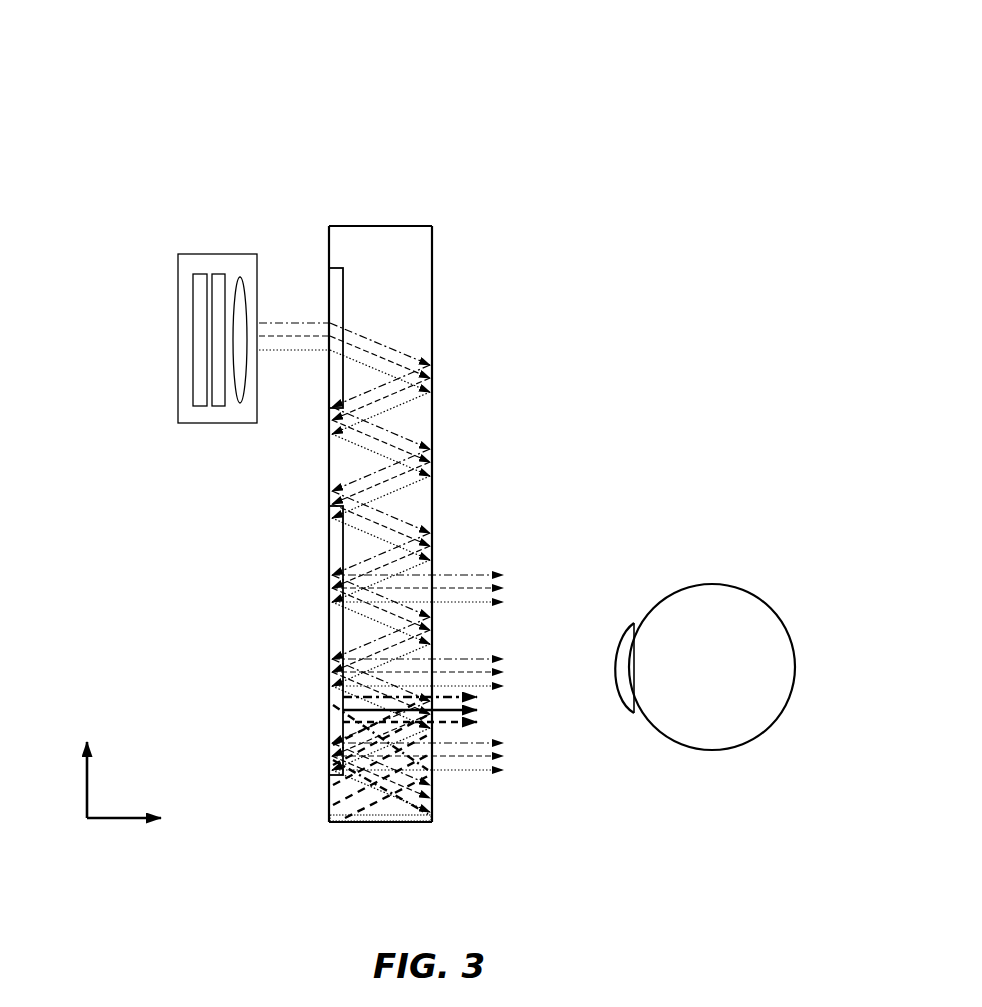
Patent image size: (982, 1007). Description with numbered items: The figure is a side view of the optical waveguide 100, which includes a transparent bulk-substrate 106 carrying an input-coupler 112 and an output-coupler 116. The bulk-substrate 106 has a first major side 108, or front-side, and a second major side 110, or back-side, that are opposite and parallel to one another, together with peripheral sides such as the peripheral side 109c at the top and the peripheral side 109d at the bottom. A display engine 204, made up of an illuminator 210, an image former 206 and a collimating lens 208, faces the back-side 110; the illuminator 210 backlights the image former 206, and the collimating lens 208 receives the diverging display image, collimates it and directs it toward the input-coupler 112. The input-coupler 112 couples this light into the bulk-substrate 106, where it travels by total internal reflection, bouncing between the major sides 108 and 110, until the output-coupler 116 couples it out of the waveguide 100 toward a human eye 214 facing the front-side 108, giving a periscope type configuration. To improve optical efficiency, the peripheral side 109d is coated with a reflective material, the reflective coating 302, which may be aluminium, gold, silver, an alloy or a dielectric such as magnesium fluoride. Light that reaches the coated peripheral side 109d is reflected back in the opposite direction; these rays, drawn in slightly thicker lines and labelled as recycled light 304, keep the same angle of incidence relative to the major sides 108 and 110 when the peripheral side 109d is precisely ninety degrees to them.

The optical waveguide 100 is at (412, 72).
The bulk-substrate 106 is at (393, 261).
The first major side 108 is at (433, 256).
The peripheral side 109c is at (389, 226).
The peripheral side 109d is at (420, 823).
The second major side 110 is at (325, 235).
The input-coupler 112 is at (327, 278).
The output-coupler 116 is at (327, 732).
The display engine 204 is at (189, 347).
The image former 206 is at (216, 406).
The collimating lens 208 is at (240, 406).
The illuminator 210 is at (200, 406).
The human eye 214 is at (735, 612).
The reflective coating 302 is at (372, 823).
The recycled light 304 is at (458, 693).